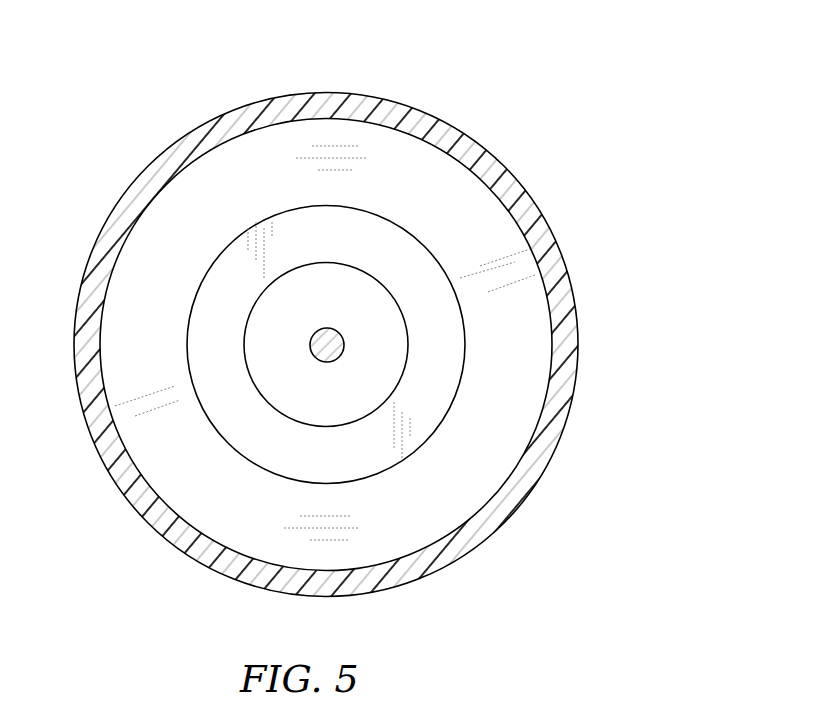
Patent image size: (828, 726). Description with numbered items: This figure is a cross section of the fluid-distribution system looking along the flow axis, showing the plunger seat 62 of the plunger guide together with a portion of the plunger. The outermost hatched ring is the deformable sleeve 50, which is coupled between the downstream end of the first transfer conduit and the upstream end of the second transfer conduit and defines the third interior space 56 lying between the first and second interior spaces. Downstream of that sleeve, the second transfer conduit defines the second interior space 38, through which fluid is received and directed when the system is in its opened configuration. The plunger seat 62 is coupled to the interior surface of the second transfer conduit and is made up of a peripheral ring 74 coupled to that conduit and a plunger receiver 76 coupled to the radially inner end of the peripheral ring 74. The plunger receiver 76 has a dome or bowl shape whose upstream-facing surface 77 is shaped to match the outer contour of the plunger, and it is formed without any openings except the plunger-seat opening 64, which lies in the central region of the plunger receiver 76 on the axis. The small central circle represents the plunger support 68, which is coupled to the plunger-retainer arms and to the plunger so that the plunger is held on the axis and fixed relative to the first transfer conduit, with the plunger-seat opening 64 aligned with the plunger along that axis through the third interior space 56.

The deformable sleeve 50 is at (325, 97).
The third interior space 56 is at (167, 232).
The second interior space 38 is at (327, 297).
The plunger support 68 is at (333, 327).
The upstream-facing surface 77 is at (442, 342).
The plunger receiver 76 is at (420, 392).
The plunger seat 62 is at (463, 485).
The plunger-seat opening 64 is at (327, 427).
The peripheral ring 74 is at (380, 540).